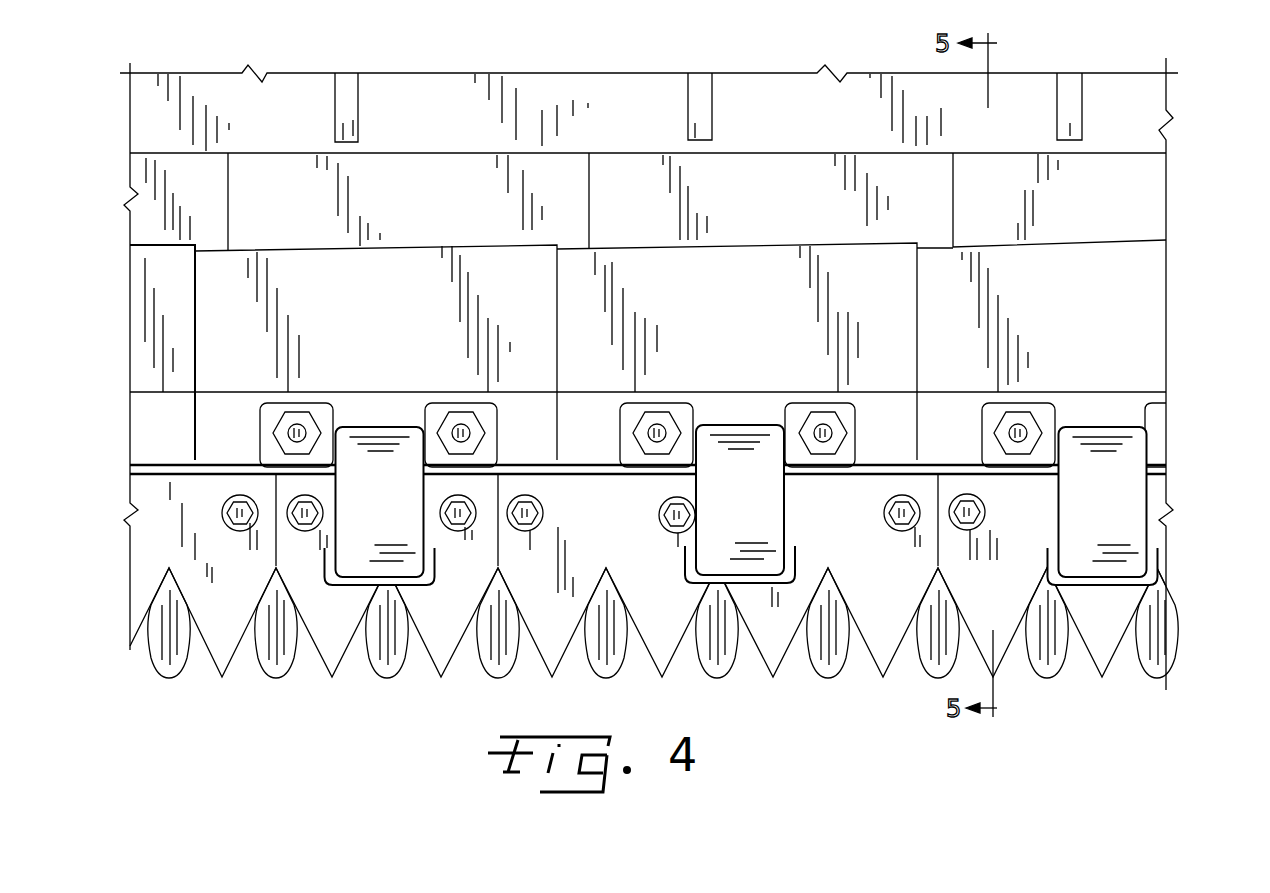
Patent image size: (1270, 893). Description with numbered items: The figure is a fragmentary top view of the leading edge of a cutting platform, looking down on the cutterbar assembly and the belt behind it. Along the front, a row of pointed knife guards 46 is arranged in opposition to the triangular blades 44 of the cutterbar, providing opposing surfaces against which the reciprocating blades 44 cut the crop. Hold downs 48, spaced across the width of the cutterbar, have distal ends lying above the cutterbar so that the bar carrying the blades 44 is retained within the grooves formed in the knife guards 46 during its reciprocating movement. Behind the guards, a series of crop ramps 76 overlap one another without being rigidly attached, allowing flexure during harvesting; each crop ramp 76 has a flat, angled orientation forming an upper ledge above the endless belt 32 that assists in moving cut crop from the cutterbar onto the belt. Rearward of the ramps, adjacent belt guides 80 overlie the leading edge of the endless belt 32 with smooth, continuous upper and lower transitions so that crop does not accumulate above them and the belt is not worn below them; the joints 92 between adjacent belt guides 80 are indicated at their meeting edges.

The endless belt 32 is at (531, 150).
The blades 44 is at (437, 640).
The knife guards 46 is at (268, 665).
The hold downs 48 is at (365, 549).
The crop ramp 76 is at (392, 342).
The belt guides 80 is at (422, 212).
The segment joints 92 is at (228, 232).